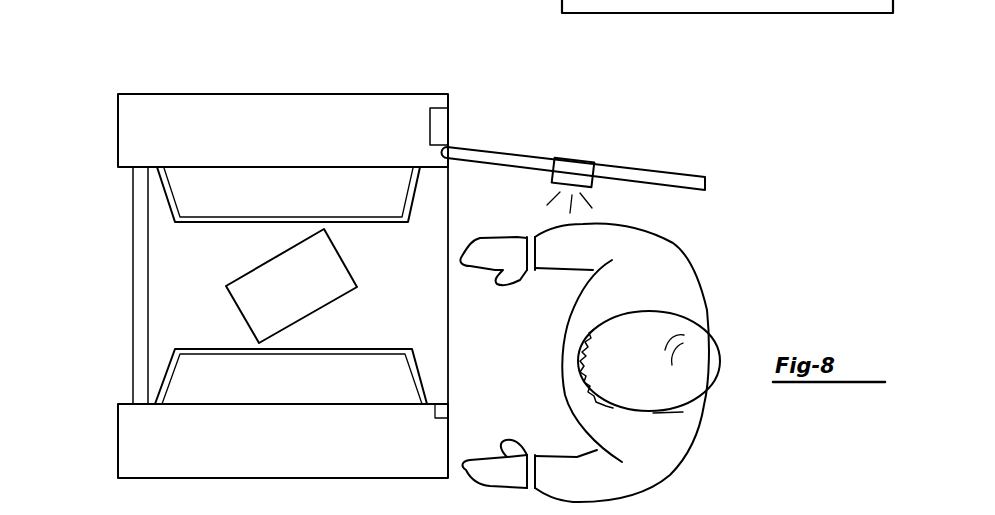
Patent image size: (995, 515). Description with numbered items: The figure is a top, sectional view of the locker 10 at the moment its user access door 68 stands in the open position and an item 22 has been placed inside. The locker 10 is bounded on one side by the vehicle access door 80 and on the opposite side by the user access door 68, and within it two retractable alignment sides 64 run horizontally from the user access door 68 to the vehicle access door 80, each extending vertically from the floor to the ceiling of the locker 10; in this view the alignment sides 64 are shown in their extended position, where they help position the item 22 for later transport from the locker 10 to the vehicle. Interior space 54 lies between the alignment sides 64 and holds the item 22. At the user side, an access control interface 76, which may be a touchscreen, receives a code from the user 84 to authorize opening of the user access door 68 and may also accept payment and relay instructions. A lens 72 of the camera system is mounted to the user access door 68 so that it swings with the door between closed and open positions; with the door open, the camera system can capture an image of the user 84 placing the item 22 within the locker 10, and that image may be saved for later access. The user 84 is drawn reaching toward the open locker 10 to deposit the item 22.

The locker 10 is at (166, 48).
The item 22 is at (238, 316).
The cavity 54 is at (163, 267).
The retractable alignment side 64 is at (163, 376).
The user access door 68 is at (677, 170).
The lens 72 is at (577, 162).
The access control interface 76 is at (448, 120).
The vehicle access door 80 is at (132, 207).
The user 84 is at (702, 293).